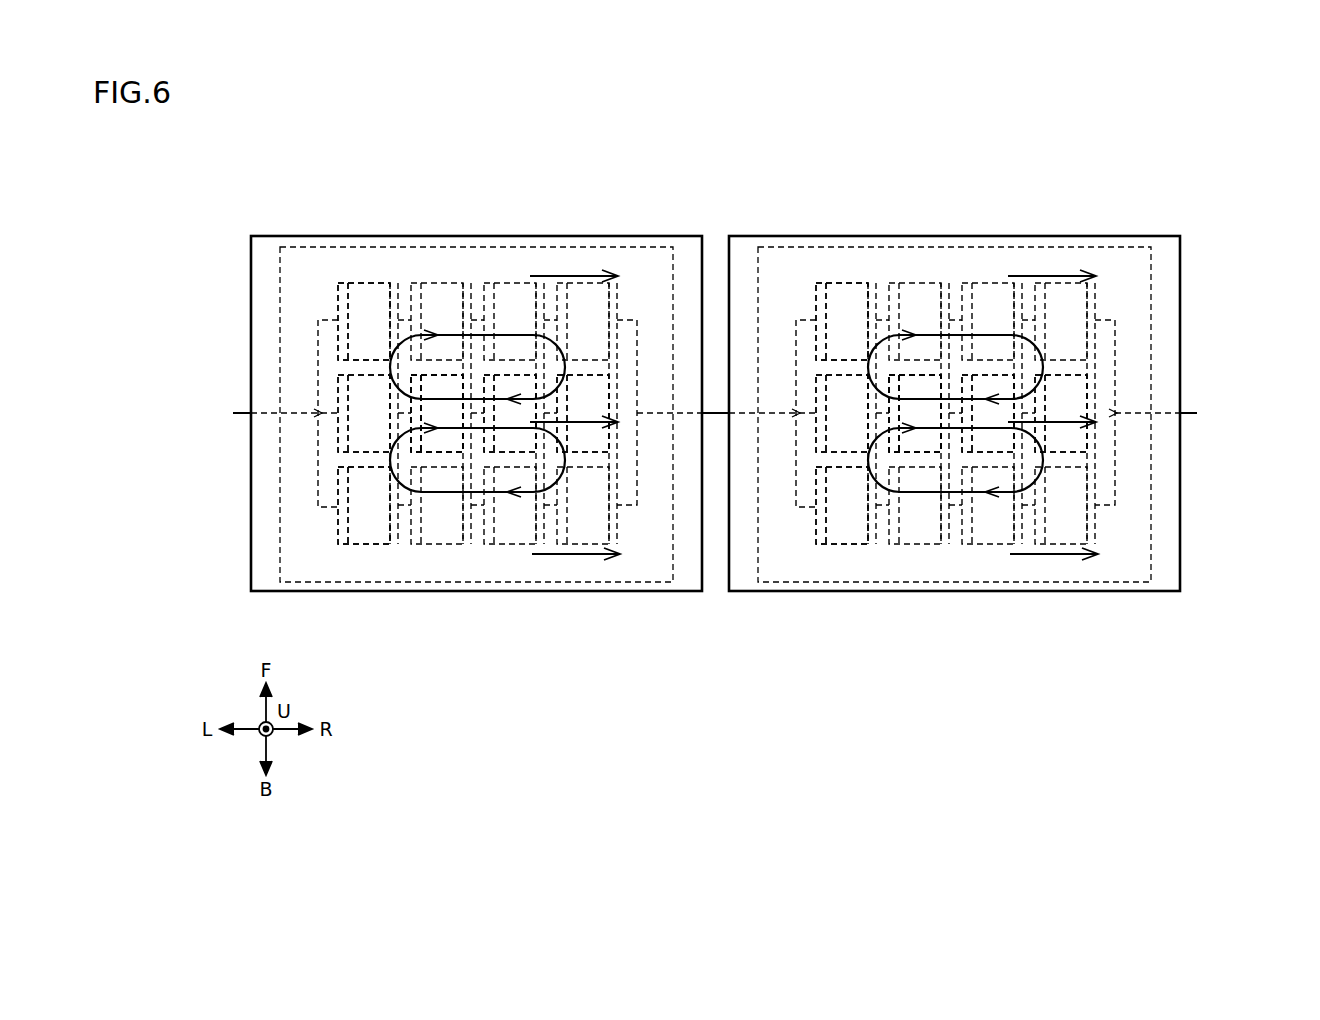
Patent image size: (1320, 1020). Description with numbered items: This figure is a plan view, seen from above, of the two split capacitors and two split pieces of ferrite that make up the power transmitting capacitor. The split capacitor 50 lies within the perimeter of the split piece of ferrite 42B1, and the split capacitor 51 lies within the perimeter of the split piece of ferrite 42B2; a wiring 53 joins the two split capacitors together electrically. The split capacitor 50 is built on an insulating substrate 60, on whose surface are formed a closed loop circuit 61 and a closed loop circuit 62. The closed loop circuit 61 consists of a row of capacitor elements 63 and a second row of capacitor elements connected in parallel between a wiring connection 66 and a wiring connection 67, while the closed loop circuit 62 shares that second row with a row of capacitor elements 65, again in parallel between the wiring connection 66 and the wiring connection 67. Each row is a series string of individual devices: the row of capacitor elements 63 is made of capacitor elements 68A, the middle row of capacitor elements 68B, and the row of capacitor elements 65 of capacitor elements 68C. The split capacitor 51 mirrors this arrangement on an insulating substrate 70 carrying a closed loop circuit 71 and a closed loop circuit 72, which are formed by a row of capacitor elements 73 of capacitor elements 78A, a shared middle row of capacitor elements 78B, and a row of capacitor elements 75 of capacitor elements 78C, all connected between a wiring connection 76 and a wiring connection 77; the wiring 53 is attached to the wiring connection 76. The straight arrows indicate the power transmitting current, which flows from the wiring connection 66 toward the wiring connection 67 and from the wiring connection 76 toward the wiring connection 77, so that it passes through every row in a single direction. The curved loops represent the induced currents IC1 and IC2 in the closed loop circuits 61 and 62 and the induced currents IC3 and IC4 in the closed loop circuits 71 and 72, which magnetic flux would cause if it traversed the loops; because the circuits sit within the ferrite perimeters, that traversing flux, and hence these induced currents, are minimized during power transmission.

The split piece of ferrite 42B1 is at (310, 237).
The split piece of ferrite 42B2 is at (954, 391).
The split capacitor 50 is at (166, 255).
The split capacitor 51 is at (787, 255).
The wiring 53 is at (716, 413).
The insulating substrate 60 is at (280, 272).
The closed loop circuit 61 is at (214, 315).
The closed loop circuit 62 is at (214, 455).
The row of capacitor elements 63 is at (338, 303).
The row of capacitor elements 65 is at (338, 520).
The wiring connection 66 is at (250, 418).
The wiring connection 67 is at (673, 413).
The capacitor element 68A is at (367, 283).
The capacitor element 68B is at (447, 372).
The capacitor element 68C is at (362, 544).
The insulating substrate 70 is at (1007, 414).
The closed loop circuit 71 is at (1035, 321).
The closed loop circuit 72 is at (1035, 507).
The row of capacitor elements 73 is at (1016, 321).
The row of capacitor elements 75 is at (1016, 505).
The wiring connection 76 is at (760, 304).
The wiring connection 77 is at (1183, 421).
The capacitor element 78A is at (842, 275).
The capacitor element 78B is at (915, 321).
The capacitor element 78C is at (842, 553).
The induced current IC1 is at (514, 335).
The induced current IC2 is at (486, 492).
The induced current IC3 is at (955, 297).
The induced current IC4 is at (955, 531).